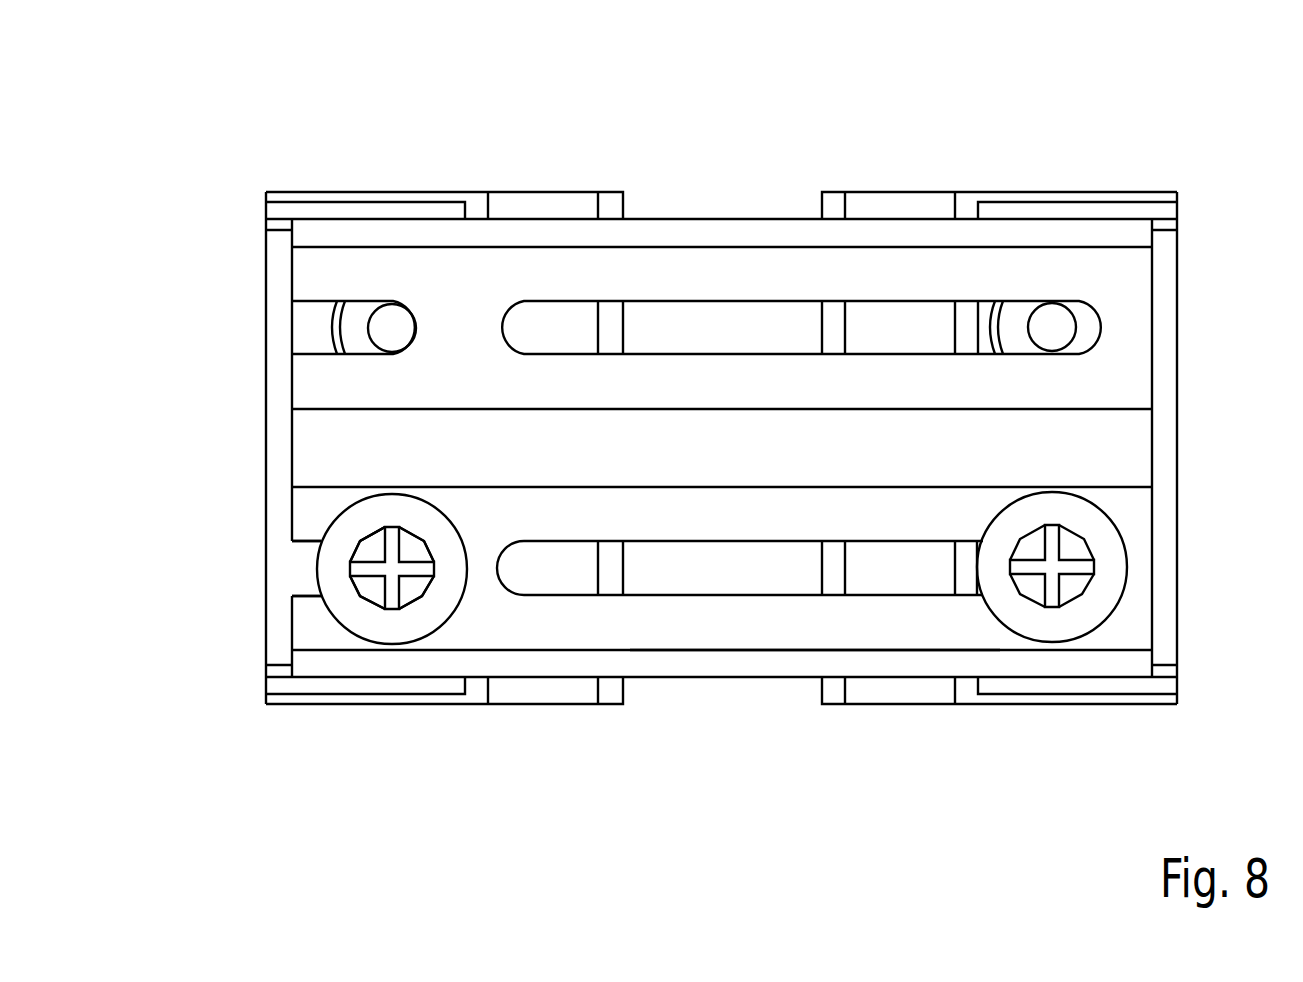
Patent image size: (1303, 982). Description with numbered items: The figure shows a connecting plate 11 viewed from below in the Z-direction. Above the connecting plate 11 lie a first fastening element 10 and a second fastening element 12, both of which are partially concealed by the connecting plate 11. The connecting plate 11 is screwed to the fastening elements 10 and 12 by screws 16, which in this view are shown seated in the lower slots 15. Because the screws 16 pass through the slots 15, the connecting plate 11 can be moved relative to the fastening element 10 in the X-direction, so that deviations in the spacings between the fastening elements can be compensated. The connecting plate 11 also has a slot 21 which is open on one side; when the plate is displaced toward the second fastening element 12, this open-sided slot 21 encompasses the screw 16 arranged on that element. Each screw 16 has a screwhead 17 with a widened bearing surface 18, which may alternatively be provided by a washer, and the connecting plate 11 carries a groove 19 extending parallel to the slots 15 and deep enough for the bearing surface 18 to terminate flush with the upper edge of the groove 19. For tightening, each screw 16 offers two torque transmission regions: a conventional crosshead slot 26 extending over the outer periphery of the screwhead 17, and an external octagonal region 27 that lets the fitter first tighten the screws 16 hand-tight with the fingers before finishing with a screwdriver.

The first fastening element 10 is at (440, 192).
The connecting plate 11 is at (718, 197).
The second fastening element 12 is at (1000, 192).
The slot 15 is at (710, 593).
The screw 16 is at (416, 628).
The screwhead 17 is at (378, 596).
The bearing surface 18 is at (447, 590).
The groove 19 is at (795, 648).
The slot open on one side 21 is at (306, 592).
The crosshead slot 26 is at (373, 572).
The external octagonal region 27 is at (350, 545).